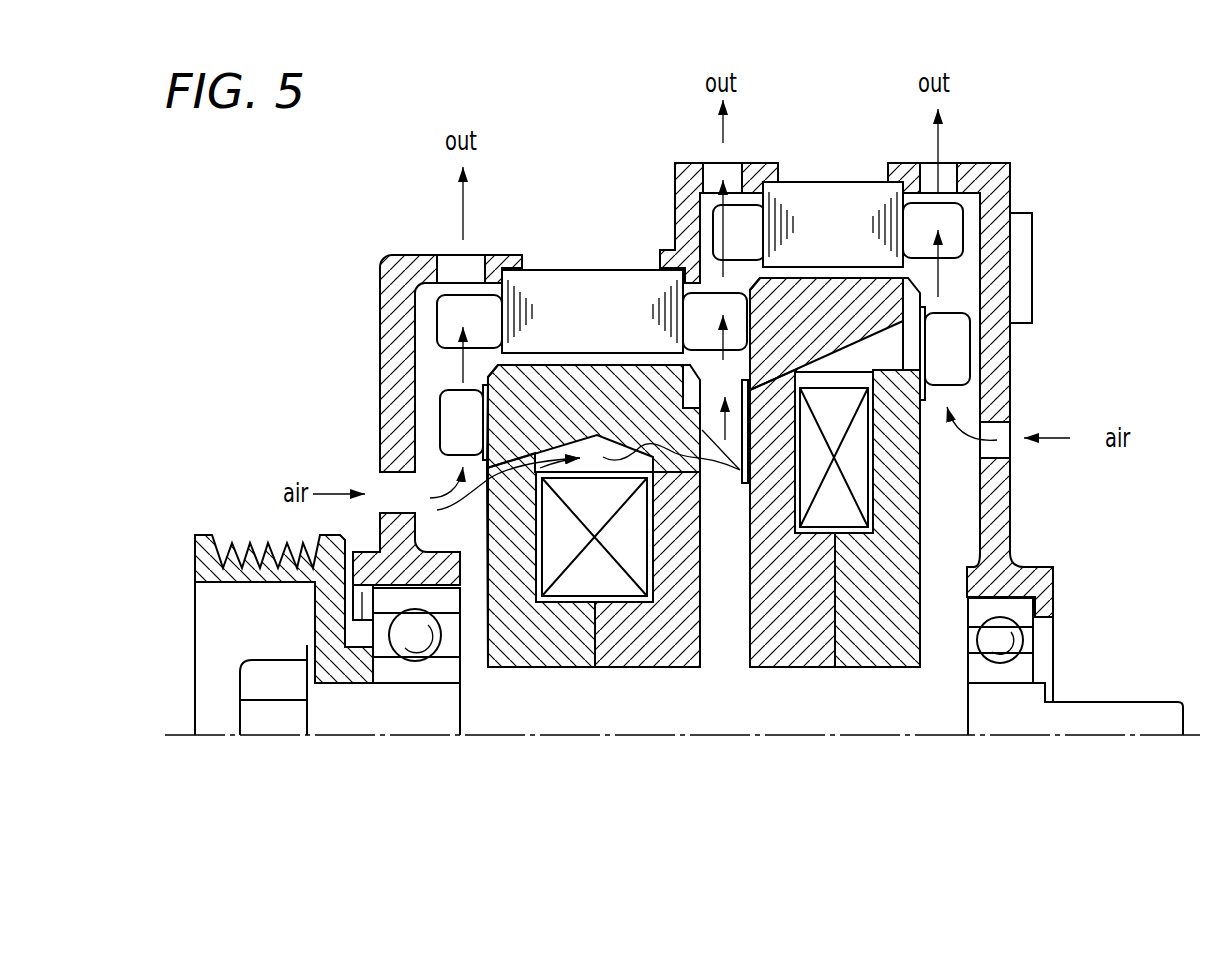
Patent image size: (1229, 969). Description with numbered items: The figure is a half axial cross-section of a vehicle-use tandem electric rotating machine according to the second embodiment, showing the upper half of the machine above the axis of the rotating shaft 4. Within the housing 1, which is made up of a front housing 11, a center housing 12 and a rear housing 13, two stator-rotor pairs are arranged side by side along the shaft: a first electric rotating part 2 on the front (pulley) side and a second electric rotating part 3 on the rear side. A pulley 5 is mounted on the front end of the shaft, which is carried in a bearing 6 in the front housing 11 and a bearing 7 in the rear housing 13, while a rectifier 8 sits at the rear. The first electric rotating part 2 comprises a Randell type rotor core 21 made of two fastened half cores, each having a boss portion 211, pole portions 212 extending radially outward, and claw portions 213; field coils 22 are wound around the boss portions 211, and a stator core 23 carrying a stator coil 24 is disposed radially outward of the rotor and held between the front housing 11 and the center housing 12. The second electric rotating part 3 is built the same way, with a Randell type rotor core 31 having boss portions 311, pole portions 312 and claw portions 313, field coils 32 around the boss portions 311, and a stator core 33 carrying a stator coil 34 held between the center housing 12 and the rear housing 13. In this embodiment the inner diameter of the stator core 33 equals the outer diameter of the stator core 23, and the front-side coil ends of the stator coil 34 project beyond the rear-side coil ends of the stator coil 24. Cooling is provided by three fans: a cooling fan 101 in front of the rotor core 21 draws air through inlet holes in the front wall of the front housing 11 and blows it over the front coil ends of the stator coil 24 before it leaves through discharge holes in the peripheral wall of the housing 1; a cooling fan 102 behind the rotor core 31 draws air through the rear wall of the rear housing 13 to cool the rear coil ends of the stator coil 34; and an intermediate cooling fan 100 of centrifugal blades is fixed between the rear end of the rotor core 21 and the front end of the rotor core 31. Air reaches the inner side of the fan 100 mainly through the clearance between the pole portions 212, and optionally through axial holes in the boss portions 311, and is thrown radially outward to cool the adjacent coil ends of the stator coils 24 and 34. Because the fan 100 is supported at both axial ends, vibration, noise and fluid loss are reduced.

The housing 1 is at (674, 384).
The first electric rotating part 2 is at (509, 480).
The second electric rotating part 3 is at (915, 429).
The rotating shaft 4 is at (545, 717).
The pulley 5 is at (205, 560).
The bearing 6 is at (397, 675).
The bearing 7 is at (987, 670).
The rectifier 8 is at (1034, 270).
The front housing 11 is at (402, 255).
The center housing 12 is at (690, 163).
The rear housing 13 is at (997, 173).
The Randell type rotor core 21 is at (577, 518).
The field coils 22 is at (600, 573).
The stator core 23 is at (553, 285).
The stator coil 24 is at (492, 308).
The Randell type rotor core 31 is at (934, 429).
The field coils 32 is at (843, 507).
The stator core 33 is at (837, 213).
The stator coil 34 is at (972, 195).
The cooling fan 100 is at (717, 430).
The cooling fan 101 is at (452, 423).
The cooling fan 102 is at (953, 360).
The boss portion 211 is at (513, 553).
The pole portions 212 is at (495, 600).
The claw portions 213 is at (580, 385).
The boss portion 311 is at (800, 645).
The pole portions 312 is at (777, 390).
The claw portions 313 is at (868, 293).